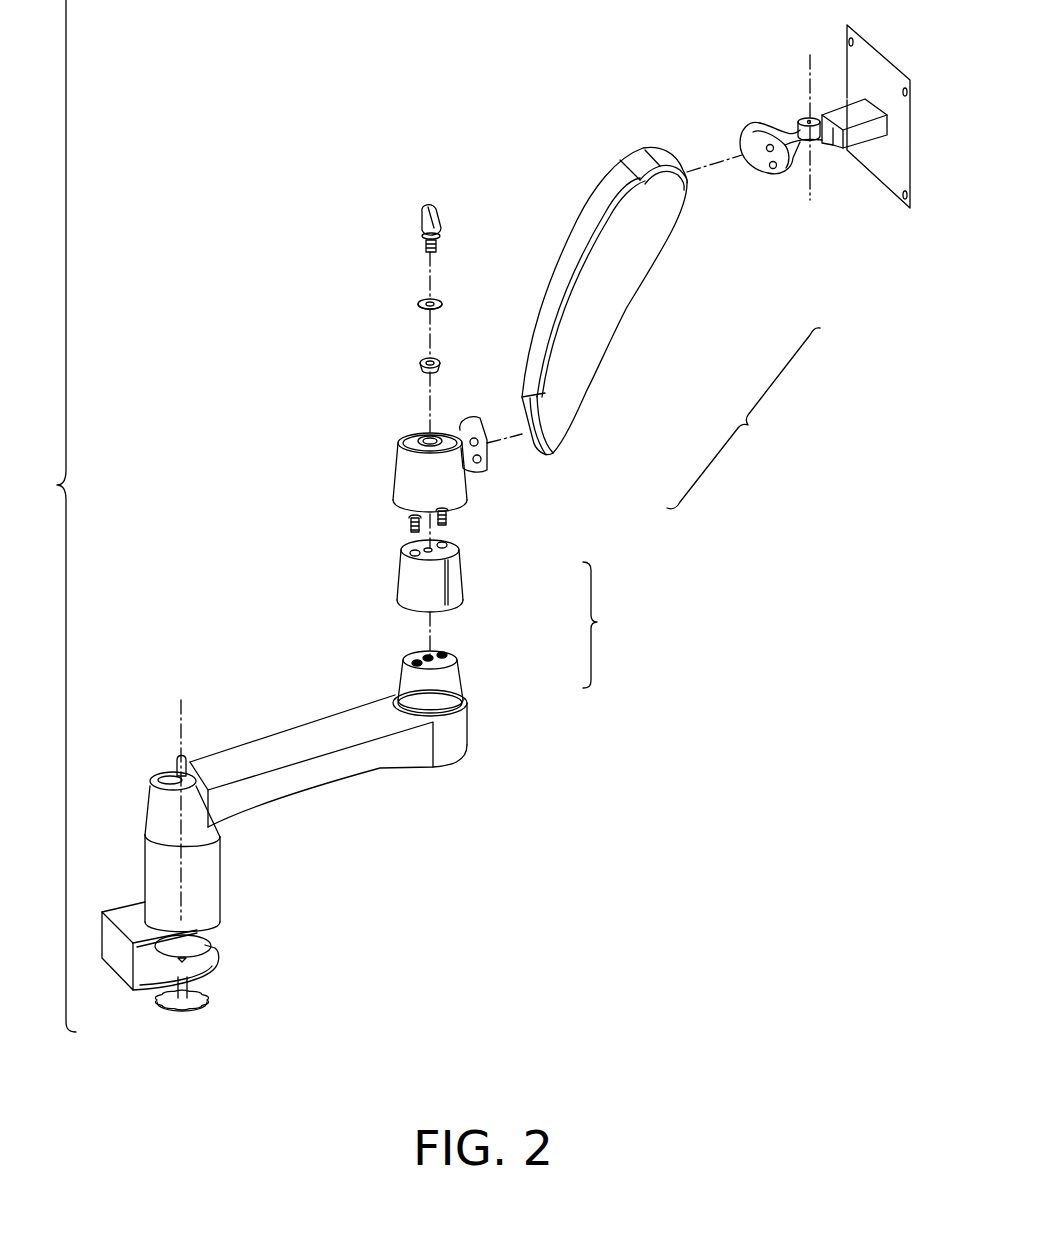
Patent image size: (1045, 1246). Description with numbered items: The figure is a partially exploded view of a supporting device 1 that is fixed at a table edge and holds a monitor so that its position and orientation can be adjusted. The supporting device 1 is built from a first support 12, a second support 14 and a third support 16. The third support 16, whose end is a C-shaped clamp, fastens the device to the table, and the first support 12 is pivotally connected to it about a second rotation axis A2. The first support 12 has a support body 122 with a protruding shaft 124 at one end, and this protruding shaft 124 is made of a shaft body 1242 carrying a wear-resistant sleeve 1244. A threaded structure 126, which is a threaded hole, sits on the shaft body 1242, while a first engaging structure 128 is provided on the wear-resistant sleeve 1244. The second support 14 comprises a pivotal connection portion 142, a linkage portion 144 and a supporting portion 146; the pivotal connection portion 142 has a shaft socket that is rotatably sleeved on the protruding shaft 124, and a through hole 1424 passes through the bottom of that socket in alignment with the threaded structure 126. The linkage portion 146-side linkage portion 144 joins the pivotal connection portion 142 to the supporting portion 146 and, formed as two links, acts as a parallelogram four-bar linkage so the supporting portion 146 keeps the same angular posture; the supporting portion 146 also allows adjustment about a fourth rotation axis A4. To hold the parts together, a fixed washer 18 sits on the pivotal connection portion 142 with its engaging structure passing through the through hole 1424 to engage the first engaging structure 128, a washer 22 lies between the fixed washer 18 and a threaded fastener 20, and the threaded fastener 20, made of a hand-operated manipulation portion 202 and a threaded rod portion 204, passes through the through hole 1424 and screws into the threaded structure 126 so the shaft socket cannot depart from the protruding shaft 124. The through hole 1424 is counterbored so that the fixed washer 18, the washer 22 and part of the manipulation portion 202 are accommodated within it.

The supporting device 1 is at (53, 516).
The first support 12 is at (240, 598).
The second support 14 is at (743, 418).
The third support 16 is at (205, 880).
The fixed washer 18 is at (422, 364).
The threaded fastener 20 is at (456, 217).
The washer 22 is at (422, 303).
The support body 122 is at (328, 773).
The protruding shaft 124 is at (617, 625).
The threaded structure 126 is at (428, 658).
The first engaging structure 128 is at (428, 550).
The pivotal connection portion 142 is at (440, 482).
The linkage portion 144 is at (625, 285).
The supporting portion 146 is at (767, 168).
The manipulation portion 202 is at (420, 212).
The threaded rod portion 204 is at (426, 244).
The shaft body 1242 is at (450, 681).
The wear-resistant sleeve 1244 is at (455, 575).
The through hole 1424 is at (422, 440).
The second rotation axis A2 is at (180, 720).
The fourth rotation axis A4 is at (806, 76).